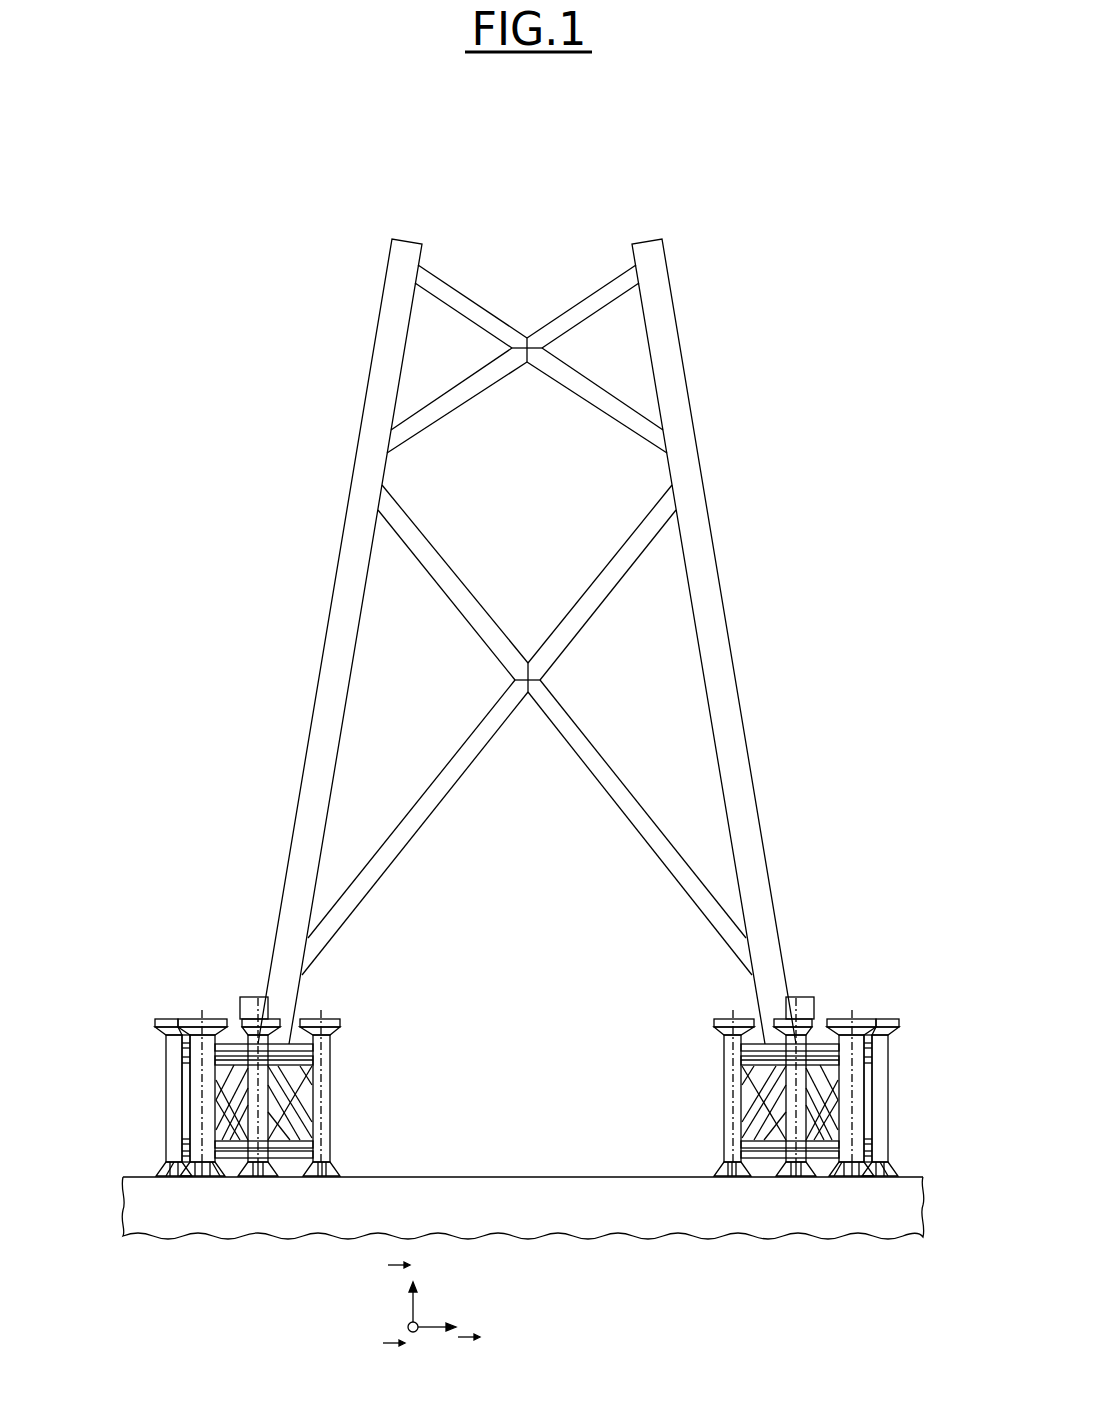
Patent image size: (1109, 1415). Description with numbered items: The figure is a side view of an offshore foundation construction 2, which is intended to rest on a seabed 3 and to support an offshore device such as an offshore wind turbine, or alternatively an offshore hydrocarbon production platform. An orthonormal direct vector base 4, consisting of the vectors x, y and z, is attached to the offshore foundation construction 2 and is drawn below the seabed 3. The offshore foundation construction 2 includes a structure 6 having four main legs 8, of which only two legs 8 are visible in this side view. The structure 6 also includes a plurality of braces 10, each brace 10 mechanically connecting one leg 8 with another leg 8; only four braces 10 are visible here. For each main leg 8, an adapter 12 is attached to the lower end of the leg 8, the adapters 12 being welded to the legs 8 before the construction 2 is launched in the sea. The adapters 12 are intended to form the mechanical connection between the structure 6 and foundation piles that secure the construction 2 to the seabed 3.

The offshore foundation construction 2 is at (527, 707).
The seabed 3 is at (523, 1228).
The orthonormal direct vector base 4 is at (396, 1324).
The structure 6 is at (527, 641).
The main legs 8 is at (527, 641).
The braces 10 is at (527, 620).
The adapter 12 is at (527, 1086).